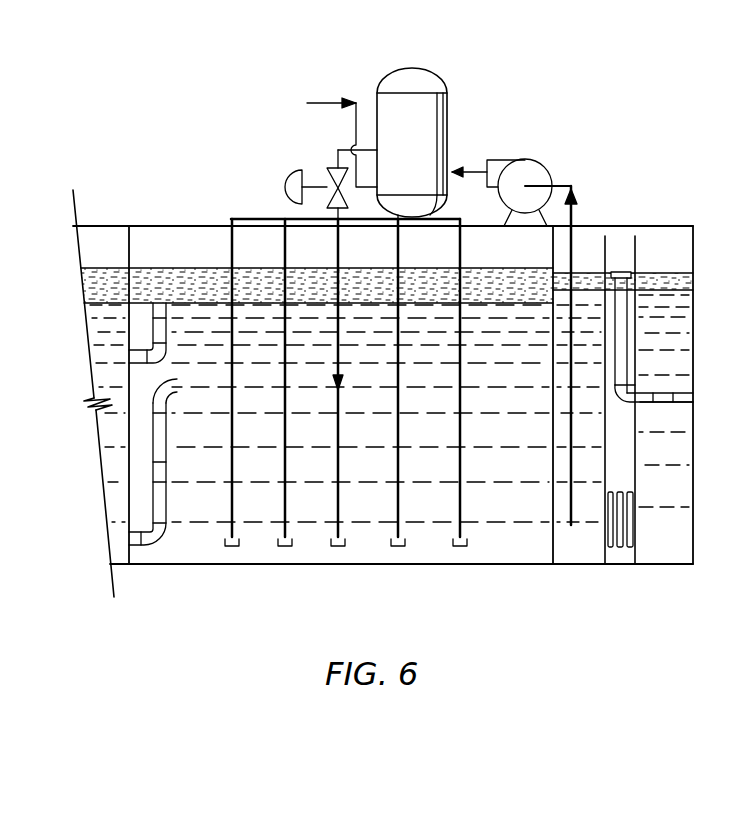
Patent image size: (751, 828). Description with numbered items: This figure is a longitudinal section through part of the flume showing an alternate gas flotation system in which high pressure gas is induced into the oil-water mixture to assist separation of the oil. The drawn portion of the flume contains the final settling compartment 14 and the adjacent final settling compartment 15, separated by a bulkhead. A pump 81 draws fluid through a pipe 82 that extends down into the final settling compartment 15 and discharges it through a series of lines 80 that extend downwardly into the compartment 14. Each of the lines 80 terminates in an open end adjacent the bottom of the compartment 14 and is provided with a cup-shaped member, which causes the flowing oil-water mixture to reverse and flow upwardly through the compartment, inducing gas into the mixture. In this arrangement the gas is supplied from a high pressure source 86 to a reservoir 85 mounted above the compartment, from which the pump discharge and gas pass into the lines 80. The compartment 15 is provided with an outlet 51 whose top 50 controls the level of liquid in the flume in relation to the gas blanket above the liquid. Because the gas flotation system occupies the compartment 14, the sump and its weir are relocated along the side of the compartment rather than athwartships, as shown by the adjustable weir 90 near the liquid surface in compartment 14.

The final settling compartment 14 is at (516, 509).
The final settling compartment 15 is at (672, 511).
The top of outlet 50 is at (632, 323).
The outlet 51 is at (662, 403).
The lines 80 is at (233, 351).
The pump 81 is at (517, 158).
The pipe 82 is at (559, 185).
The reservoir 85 is at (437, 71).
The high pressure source 86 is at (325, 103).
The adjustable weir 90 is at (487, 268).